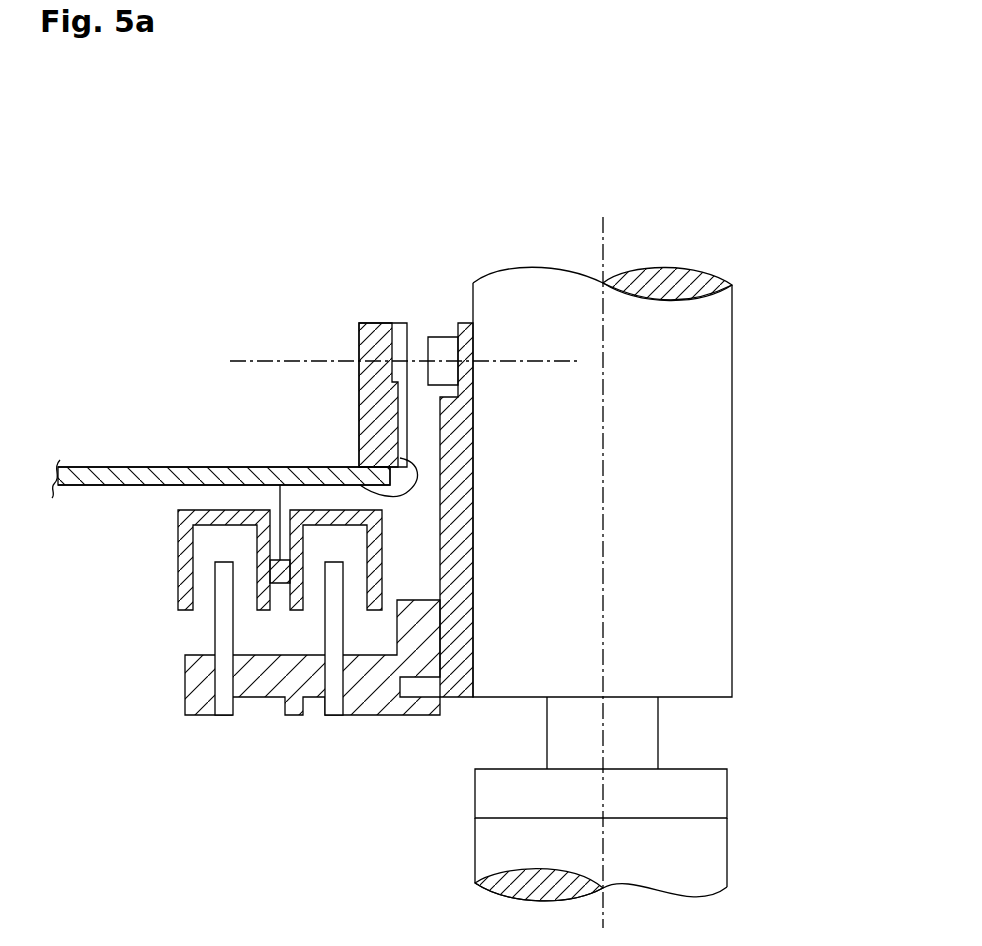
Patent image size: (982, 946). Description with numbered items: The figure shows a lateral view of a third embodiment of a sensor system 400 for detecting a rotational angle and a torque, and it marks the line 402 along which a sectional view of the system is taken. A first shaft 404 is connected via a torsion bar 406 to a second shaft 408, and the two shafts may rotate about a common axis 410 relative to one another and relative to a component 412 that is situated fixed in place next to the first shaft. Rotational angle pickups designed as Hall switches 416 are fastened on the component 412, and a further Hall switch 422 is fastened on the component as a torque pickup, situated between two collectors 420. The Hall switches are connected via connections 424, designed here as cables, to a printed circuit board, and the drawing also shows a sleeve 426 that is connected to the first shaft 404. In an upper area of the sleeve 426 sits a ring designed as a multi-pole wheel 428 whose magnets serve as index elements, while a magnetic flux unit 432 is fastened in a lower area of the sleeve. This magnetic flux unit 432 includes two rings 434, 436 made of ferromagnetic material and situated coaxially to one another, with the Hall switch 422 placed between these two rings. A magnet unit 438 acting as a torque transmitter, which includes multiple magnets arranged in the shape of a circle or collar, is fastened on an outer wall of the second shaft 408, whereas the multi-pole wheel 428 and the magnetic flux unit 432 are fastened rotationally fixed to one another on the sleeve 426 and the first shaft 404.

The sensor system 400 is at (778, 246).
The section line 402 is at (240, 361).
The first shaft 404 is at (725, 528).
The torsion bar 406 is at (648, 733).
The second shaft 408 is at (720, 855).
The common axis 410 is at (603, 230).
The component 412 is at (276, 207).
The Hall switch 416 is at (378, 333).
The collector 420 is at (183, 577).
The Hall switch 422 is at (281, 576).
The connection 424 is at (282, 470).
The sleeve 426 is at (167, 474).
The multi-pole wheel 428 is at (445, 329).
The magnetic flux unit 432 is at (297, 700).
The ring 434 is at (242, 717).
The ring 436 is at (328, 705).
The magnet unit 438 is at (737, 798).